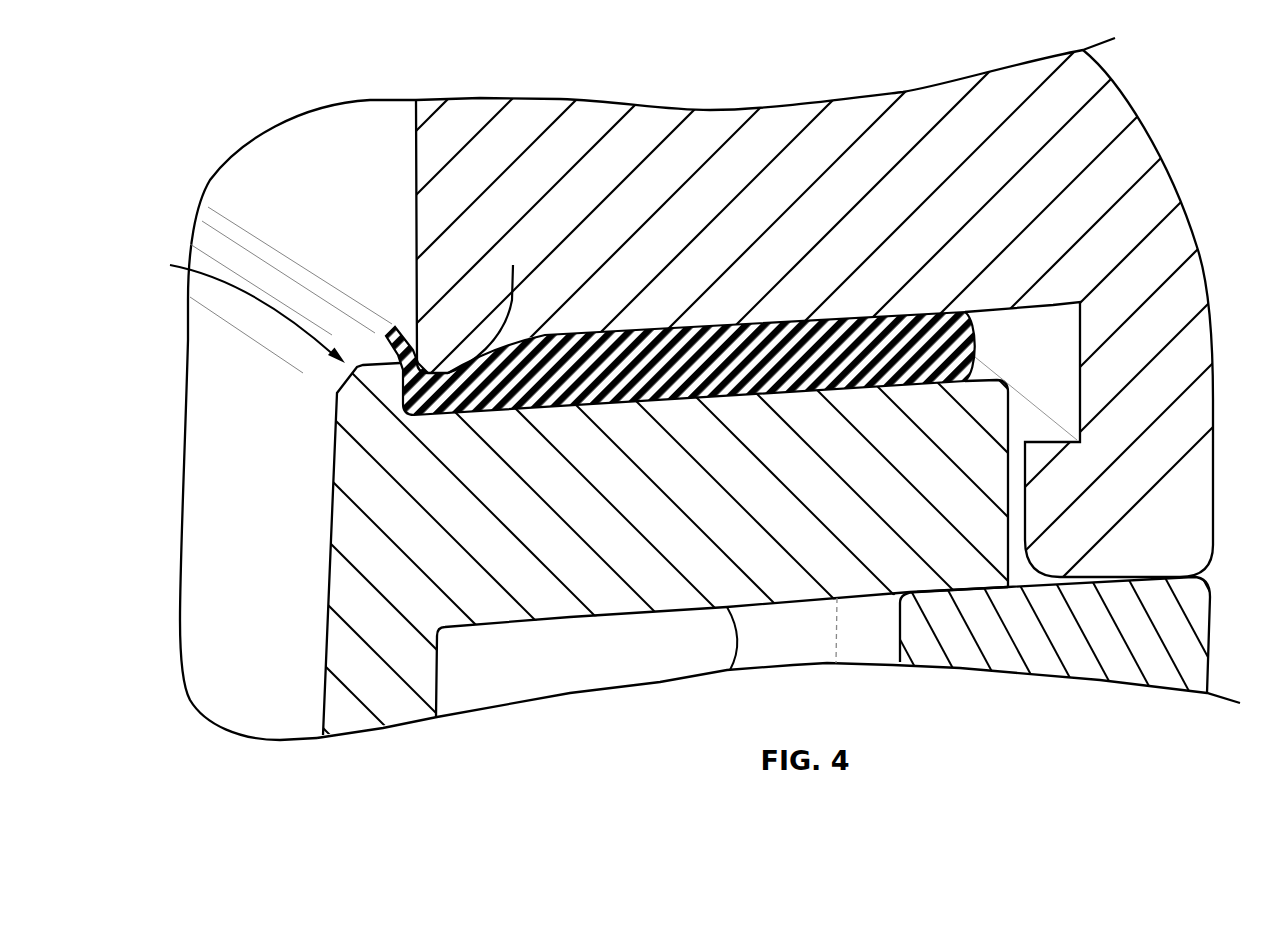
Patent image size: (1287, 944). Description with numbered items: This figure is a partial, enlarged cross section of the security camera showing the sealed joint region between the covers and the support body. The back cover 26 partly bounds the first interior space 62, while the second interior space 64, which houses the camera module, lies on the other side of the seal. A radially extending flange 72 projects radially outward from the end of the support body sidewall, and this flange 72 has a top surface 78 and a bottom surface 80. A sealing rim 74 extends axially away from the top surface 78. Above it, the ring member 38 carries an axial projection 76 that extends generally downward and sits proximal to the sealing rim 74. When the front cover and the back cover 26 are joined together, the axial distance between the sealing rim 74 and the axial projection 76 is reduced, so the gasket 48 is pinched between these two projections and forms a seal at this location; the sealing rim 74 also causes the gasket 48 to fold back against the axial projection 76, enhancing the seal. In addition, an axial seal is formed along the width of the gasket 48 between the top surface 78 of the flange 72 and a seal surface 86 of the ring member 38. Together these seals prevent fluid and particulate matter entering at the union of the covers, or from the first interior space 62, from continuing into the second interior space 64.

The back cover 26 is at (1209, 655).
The ring member 38 is at (1157, 142).
The gasket 48 is at (975, 338).
The first interior space 62 is at (509, 676).
The second interior space 64 is at (231, 535).
The radially extending flange 72 is at (1008, 418).
The sealing rim 74 is at (239, 308).
The axial projection 76 is at (513, 265).
The top surface 78 is at (975, 380).
The bottom surface 80 is at (730, 670).
The seal surface 86 is at (1053, 305).